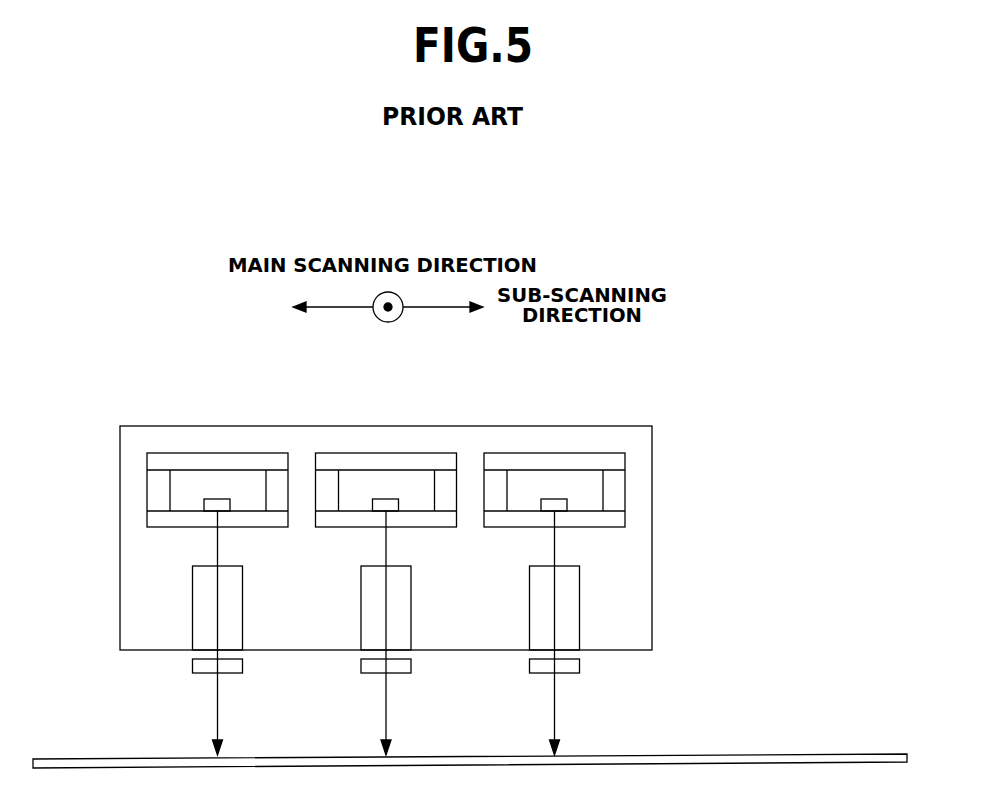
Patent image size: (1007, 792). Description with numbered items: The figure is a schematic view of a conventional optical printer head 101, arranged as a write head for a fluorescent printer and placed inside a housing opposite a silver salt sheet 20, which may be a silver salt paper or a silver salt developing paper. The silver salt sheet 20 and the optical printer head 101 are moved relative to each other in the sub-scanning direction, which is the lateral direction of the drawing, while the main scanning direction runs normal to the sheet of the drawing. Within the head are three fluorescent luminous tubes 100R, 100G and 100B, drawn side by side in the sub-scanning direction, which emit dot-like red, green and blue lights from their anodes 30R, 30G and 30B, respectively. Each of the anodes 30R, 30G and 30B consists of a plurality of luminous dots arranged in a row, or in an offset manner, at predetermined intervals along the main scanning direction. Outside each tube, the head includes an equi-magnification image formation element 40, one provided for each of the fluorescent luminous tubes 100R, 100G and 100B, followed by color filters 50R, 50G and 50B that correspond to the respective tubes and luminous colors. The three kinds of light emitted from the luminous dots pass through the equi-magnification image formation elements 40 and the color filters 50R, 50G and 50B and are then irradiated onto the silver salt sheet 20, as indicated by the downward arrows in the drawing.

The optical printer head 101 is at (124, 362).
The fluorescent luminous tube 100R is at (195, 453).
The fluorescent luminous tube 100B is at (356, 453).
The fluorescent luminous tube 100G is at (600, 453).
The anode 30R is at (222, 498).
The anode 30B is at (390, 498).
The anode 30G is at (558, 498).
The equi-magnification image formation element 40 is at (192, 603).
The color filter 50R is at (192, 662).
The color filter 50B is at (360, 662).
The color filter 50G is at (580, 663).
The silver salt sheet 20 is at (807, 753).